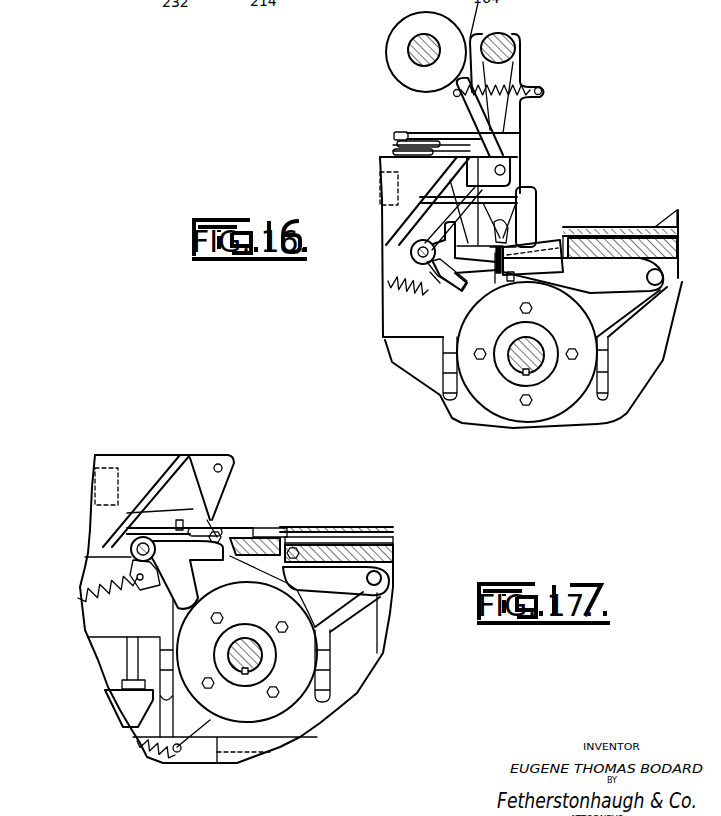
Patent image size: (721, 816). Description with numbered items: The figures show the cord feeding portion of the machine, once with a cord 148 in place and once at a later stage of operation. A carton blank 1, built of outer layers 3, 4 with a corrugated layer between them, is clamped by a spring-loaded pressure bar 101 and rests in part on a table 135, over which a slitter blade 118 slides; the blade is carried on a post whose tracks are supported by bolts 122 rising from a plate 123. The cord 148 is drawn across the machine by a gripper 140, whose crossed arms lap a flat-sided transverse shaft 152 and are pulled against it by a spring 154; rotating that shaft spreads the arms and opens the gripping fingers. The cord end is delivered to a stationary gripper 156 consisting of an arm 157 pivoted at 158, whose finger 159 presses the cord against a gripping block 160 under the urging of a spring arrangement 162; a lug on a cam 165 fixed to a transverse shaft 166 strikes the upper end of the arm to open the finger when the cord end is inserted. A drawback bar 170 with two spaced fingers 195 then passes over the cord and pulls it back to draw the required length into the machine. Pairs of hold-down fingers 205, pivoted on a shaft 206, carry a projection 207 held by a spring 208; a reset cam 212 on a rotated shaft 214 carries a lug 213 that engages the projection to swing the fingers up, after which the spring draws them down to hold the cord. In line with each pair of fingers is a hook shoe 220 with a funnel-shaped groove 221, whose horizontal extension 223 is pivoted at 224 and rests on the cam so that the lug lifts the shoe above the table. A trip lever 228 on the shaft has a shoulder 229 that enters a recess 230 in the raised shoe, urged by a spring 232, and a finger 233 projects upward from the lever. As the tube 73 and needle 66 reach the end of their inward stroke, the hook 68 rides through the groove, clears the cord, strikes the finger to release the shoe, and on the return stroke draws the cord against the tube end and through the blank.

In FIG. 16, the blank 1 is at (597, 224).
In FIG. 17, the blank 1 is at (381, 528).
In FIG. 17, the outer layer 3 is at (327, 531).
In FIG. 17, the outer layer 4 is at (352, 541).
In FIG. 17, the needle 66 is at (248, 536).
In FIG. 17, the hook 68 is at (198, 455).
In FIG. 17, the tube 73 is at (370, 538).
In FIG. 16, the pressure bar 101 is at (672, 205).
In FIG. 17, the slitter blade 118 is at (153, 505).
In FIG. 17, the bolts 122 is at (130, 654).
In FIG. 17, the plate 123 is at (118, 708).
In FIG. 16, the table 135 is at (623, 243).
In FIG. 17, the table 135 is at (394, 550).
In FIG. 16, the gripper 140 is at (522, 74).
In FIG. 16, the cord 148 is at (510, 261).
In FIG. 17, the cord 148 is at (232, 515).
In FIG. 16, the transverse shaft 152 is at (497, 33).
In FIG. 16, the spring 154 is at (534, 100).
In FIG. 16, the stationary gripper 156 is at (466, 110).
In FIG. 16, the arm 157 is at (522, 127).
In FIG. 16, the pivot 158 is at (513, 160).
In FIG. 16, the finger 159 is at (513, 216).
In FIG. 16, the gripping block 160 is at (538, 194).
In FIG. 16, the spring arrangement 162 is at (440, 128).
In FIG. 16, the cam 165 is at (392, 71).
In FIG. 16, the transverse shaft 166 is at (409, 48).
In FIG. 16, the drawback bar 170 is at (443, 182).
In FIG. 16, the fingers 195 is at (524, 193).
In FIG. 16, the hold-down fingers 205 is at (450, 212).
In FIG. 17, the hold-down fingers 205 is at (147, 533).
In FIG. 16, the shaft 206 is at (410, 256).
In FIG. 17, the shaft 206 is at (131, 551).
In FIG. 16, the projection 207 is at (455, 292).
In FIG. 17, the projection 207 is at (135, 590).
In FIG. 16, the spring 208 is at (388, 283).
In FIG. 17, the spring 208 is at (78, 593).
In FIG. 16, the reset cam 212 is at (550, 412).
In FIG. 17, the reset cam 212 is at (307, 660).
In FIG. 16, the lug 213 is at (445, 360).
In FIG. 17, the lug 213 is at (293, 546).
In FIG. 16, the shaft 214 is at (520, 375).
In FIG. 17, the shaft 214 is at (249, 672).
In FIG. 16, the hook shoe 220 is at (570, 226).
In FIG. 17, the hook shoe 220 is at (270, 546).
In FIG. 17, the funnel-shaped groove 221 is at (237, 522).
In FIG. 16, the extension 223 is at (620, 290).
In FIG. 17, the extension 223 is at (347, 584).
In FIG. 16, the pivot 224 is at (672, 287).
In FIG. 17, the pivot 224 is at (383, 577).
In FIG. 16, the trip lever 228 is at (450, 284).
In FIG. 17, the trip lever 228 is at (158, 592).
In FIG. 16, the shoulder 229 is at (497, 273).
In FIG. 17, the shoulder 229 is at (195, 582).
In FIG. 16, the recess 230 is at (510, 282).
In FIG. 17, the recess 230 is at (292, 558).
In FIG. 17, the spring 232 is at (150, 756).
In FIG. 16, the finger 233 is at (413, 238).
In FIG. 17, the finger 233 is at (137, 513).